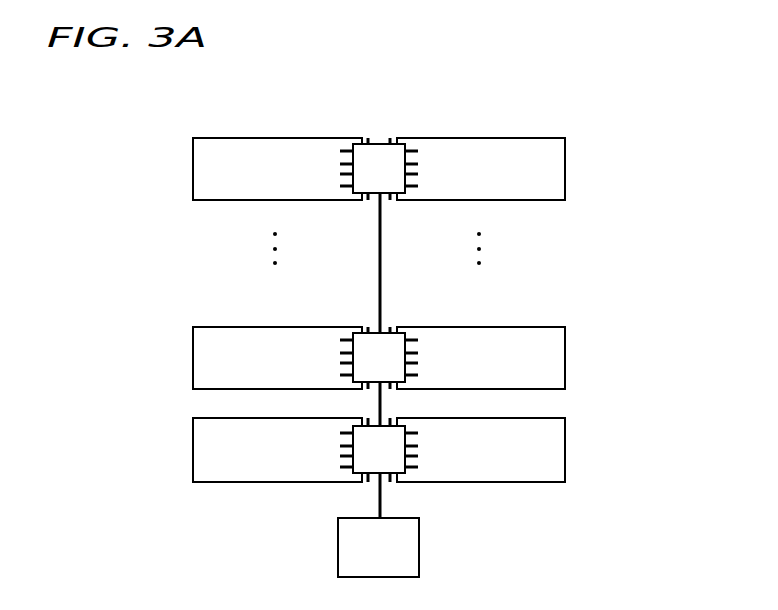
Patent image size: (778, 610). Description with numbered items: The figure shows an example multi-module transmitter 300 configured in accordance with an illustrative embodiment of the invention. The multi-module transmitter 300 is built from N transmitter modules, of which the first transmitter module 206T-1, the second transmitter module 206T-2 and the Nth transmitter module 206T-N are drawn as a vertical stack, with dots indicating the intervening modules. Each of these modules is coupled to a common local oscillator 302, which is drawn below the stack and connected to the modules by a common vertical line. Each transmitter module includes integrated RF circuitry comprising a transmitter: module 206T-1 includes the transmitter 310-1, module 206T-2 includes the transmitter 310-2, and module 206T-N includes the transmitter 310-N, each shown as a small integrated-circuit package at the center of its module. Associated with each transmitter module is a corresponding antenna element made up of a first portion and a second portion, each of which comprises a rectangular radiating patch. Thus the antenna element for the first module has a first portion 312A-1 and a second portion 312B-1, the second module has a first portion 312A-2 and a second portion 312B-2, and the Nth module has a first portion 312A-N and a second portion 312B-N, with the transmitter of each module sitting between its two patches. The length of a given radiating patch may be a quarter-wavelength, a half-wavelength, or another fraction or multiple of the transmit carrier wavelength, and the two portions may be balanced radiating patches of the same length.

The multi-module transmitter 300 is at (641, 128).
The transmitter module N 206T-N is at (163, 168).
The transmitter module 2 206T-2 is at (163, 357).
The transmitter module 1 206T-1 is at (163, 452).
The first portion of antenna element 312A-N is at (218, 138).
The first portion of antenna element 312A-2 is at (218, 327).
The first portion of antenna element 312A-1 is at (243, 483).
The second portion of antenna element 312B-N is at (499, 137).
The second portion of antenna element 312B-2 is at (480, 327).
The second portion of antenna element 312B-1 is at (497, 483).
The transmitter 310-N is at (380, 143).
The transmitter 310-2 is at (388, 331).
The transmitter 310-1 is at (375, 474).
The local oscillator 302 is at (419, 552).